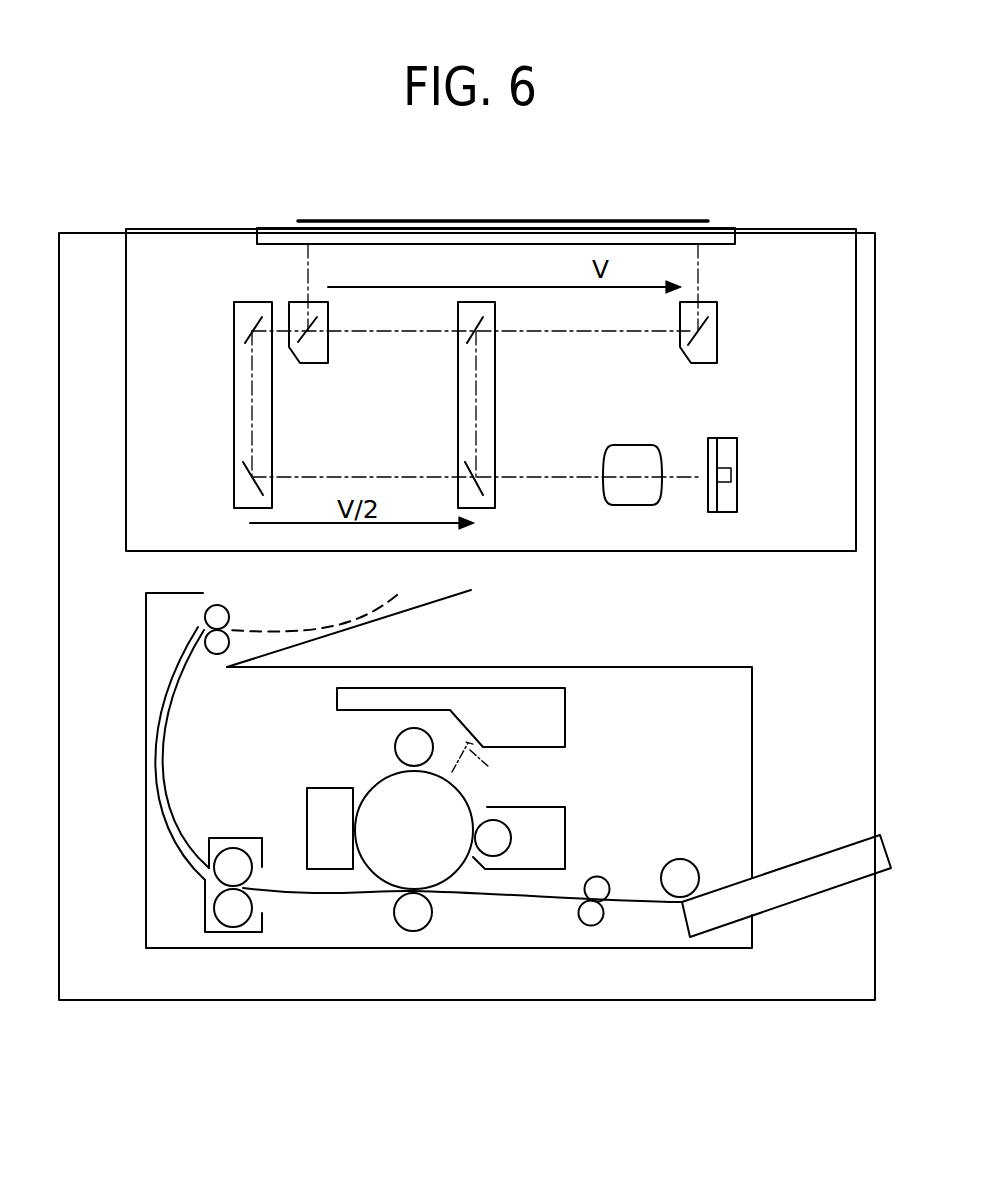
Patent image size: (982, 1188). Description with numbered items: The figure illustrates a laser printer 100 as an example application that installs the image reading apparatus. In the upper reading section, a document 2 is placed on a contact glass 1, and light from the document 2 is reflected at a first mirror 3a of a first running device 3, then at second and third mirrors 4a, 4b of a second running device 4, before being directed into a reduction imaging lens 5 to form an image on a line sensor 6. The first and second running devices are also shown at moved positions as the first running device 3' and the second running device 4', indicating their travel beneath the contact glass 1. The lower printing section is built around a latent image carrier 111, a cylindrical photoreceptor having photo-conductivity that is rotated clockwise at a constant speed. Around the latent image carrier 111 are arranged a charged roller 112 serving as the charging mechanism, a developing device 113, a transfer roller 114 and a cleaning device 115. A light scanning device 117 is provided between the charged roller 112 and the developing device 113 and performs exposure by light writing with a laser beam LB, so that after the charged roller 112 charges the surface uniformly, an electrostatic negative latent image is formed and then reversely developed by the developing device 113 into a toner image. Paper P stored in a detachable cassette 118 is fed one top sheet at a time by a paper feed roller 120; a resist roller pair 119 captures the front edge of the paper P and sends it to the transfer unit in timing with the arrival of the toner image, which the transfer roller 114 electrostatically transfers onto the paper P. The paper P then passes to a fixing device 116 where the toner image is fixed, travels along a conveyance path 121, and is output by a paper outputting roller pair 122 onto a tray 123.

The contact glass 1 is at (271, 228).
The document 2 is at (317, 221).
The first running device 3 is at (326, 310).
The first mirror 3a is at (312, 352).
The first running device 3' is at (720, 310).
The second running device 4 is at (236, 405).
The second mirror 4a is at (245, 332).
The third mirror 4b is at (247, 485).
The second running device 4' is at (497, 405).
The reduction imaging lens 5 is at (640, 445).
The line sensor 6 is at (722, 438).
The laser printer 100 is at (752, 679).
The latent image carrier 111 is at (378, 790).
The charged roller 112 is at (395, 745).
The developing device 113 is at (565, 820).
The transfer roller 114 is at (434, 913).
The cleaning device 115 is at (307, 806).
The fixing device 116 is at (262, 917).
The light scanning device 117 is at (565, 700).
The cassette 118 is at (803, 901).
The resist roller pair 119 is at (622, 911).
The paper feed roller 120 is at (680, 859).
The conveyance path 121 is at (172, 730).
The paper outputting roller pair 122 is at (239, 616).
The tray 123 is at (422, 606).
The laser beam LB is at (487, 762).
The paper P is at (517, 903).